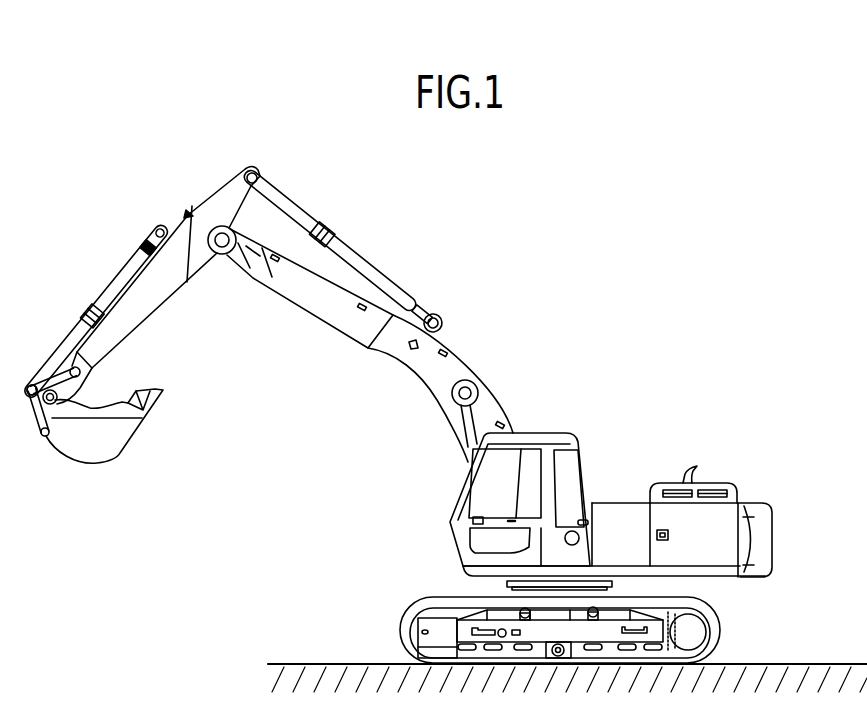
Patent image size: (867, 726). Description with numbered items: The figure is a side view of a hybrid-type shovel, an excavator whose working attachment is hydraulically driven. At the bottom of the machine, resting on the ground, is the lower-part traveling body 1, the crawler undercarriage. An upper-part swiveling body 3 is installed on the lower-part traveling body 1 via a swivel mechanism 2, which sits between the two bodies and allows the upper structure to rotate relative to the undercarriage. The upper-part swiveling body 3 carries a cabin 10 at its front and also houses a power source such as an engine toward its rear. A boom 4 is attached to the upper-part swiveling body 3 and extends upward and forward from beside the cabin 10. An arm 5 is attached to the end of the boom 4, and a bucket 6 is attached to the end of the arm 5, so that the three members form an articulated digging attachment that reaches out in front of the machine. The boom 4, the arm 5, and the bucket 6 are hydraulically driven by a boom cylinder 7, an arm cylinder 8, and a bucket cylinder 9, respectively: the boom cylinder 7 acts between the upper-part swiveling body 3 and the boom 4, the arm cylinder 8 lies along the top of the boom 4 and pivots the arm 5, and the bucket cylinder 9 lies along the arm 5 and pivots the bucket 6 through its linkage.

The lower-part traveling body 1 is at (400, 632).
The swivel mechanism 2 is at (613, 586).
The upper-part swiveling body 3 is at (623, 502).
The boom 4 is at (397, 358).
The arm 5 is at (163, 292).
The bucket 6 is at (92, 458).
The boom cylinder 7 is at (475, 420).
The arm cylinder 8 is at (385, 283).
The bucket cylinder 9 is at (118, 283).
The cabin 10 is at (573, 435).